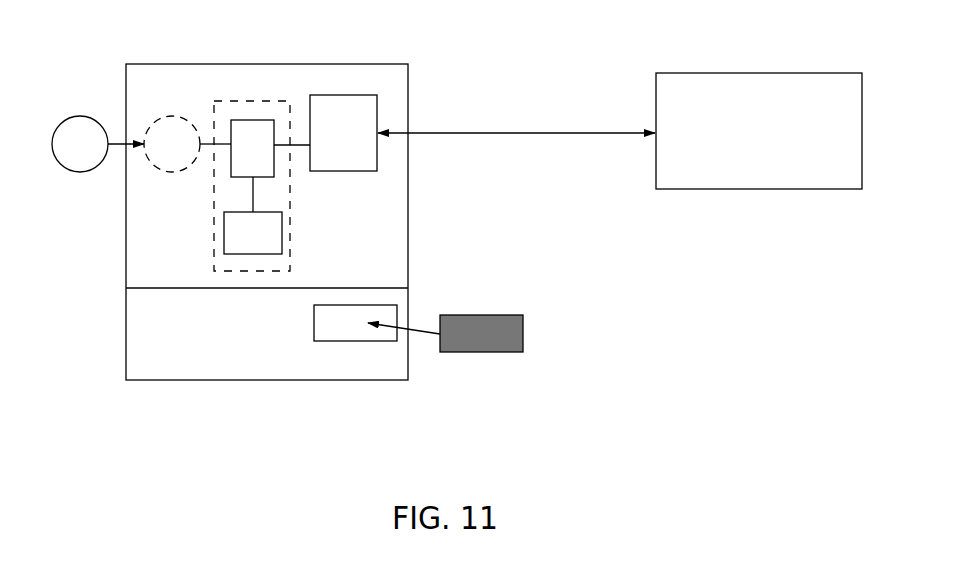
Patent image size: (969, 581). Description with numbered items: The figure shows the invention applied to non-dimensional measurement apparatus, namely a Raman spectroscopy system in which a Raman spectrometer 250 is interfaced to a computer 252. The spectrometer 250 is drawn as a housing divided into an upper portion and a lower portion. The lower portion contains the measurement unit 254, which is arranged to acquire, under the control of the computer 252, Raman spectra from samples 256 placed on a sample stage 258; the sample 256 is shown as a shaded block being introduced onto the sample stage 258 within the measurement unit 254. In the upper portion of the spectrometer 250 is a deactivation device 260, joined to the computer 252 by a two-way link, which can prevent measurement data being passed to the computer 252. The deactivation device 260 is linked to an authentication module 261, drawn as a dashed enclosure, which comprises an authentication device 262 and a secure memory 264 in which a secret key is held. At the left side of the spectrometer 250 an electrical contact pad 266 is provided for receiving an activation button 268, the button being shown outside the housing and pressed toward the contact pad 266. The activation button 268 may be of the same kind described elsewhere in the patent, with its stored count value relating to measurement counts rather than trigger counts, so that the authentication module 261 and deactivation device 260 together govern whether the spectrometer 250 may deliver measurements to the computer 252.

The Raman spectrometer 250 is at (313, 64).
The computer 252 is at (742, 141).
The measurement unit 254 is at (288, 345).
The sample 256 is at (480, 315).
The sample stage 258 is at (355, 343).
The deactivation device 260 is at (326, 144).
The authentication module 261 is at (291, 233).
The authentication device 262 is at (261, 166).
The secure memory 264 is at (236, 245).
The electrical contact pad 266 is at (172, 116).
The activation button 268 is at (80, 116).